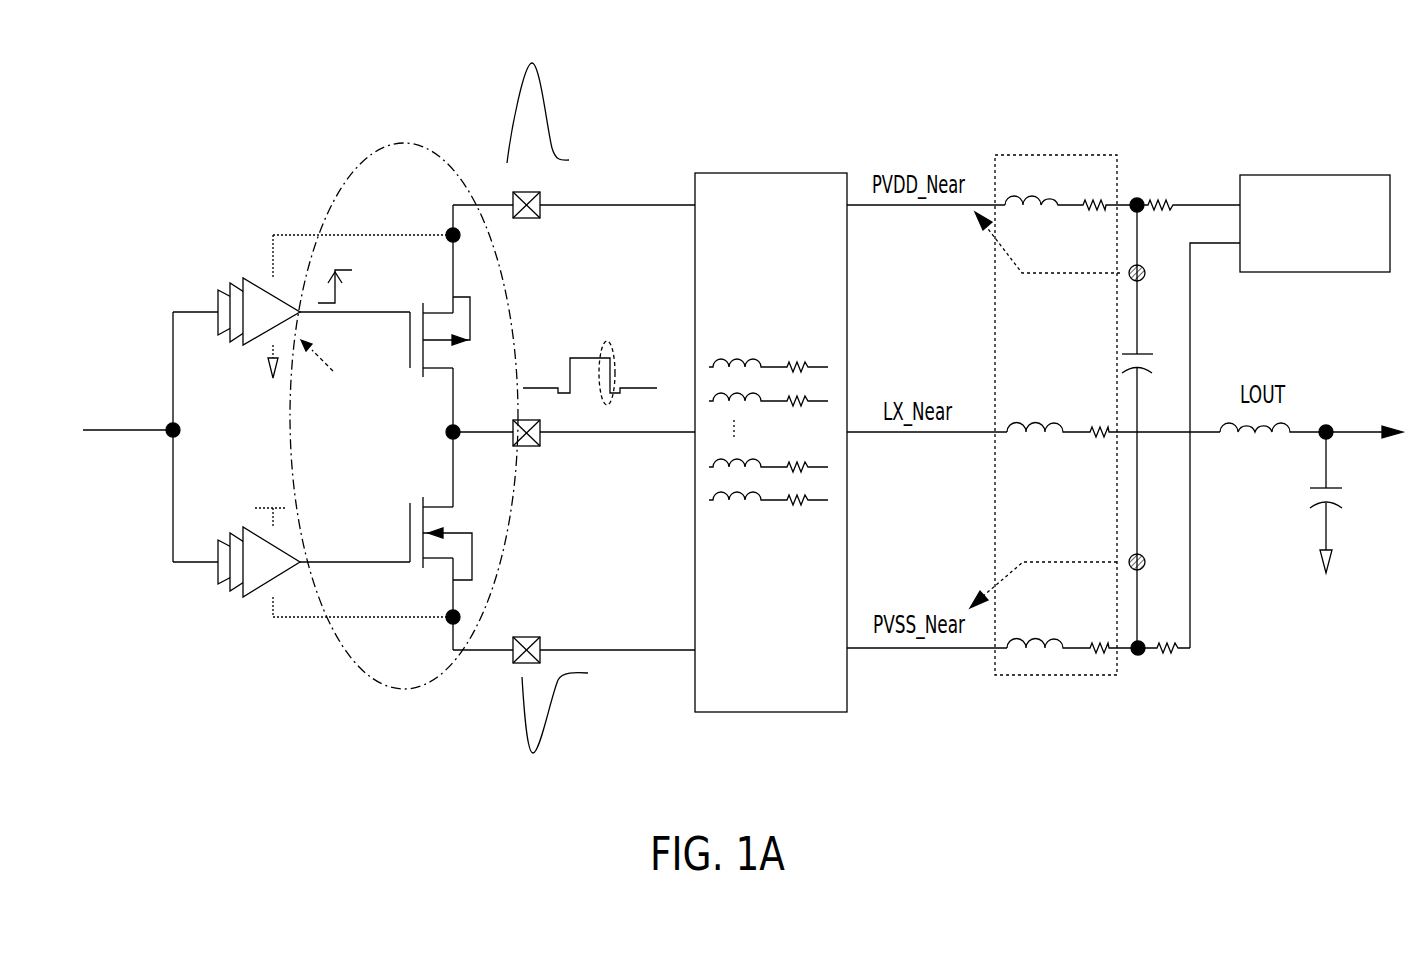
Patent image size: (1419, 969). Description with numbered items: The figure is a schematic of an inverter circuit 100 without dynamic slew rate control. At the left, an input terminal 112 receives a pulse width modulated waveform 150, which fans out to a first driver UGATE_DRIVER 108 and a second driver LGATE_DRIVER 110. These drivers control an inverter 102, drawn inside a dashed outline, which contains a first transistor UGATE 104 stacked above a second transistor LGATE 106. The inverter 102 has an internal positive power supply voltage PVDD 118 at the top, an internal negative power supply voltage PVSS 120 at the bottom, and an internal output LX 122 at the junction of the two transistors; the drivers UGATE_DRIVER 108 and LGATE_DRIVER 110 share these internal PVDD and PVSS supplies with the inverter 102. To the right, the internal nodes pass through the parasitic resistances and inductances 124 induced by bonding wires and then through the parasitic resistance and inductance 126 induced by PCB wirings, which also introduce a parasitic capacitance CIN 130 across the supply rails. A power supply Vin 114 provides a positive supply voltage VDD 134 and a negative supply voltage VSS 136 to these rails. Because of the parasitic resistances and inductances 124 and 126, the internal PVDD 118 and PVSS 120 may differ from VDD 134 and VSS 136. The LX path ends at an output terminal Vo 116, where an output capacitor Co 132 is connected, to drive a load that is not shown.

The inverter circuit 100 is at (295, 147).
The inverter 102 is at (405, 143).
The first transistor UGATE 104 is at (390, 235).
The second transistor LGATE 106 is at (357, 525).
The first driver UGATE_DRIVER 108 is at (172, 212).
The second driver LGATE_DRIVER 110 is at (258, 655).
The input terminal 112 is at (130, 427).
The power supply Vin 114 is at (1298, 173).
The output terminal Vo 116 is at (1342, 402).
The internal positive power supply voltage PVDD 118 is at (595, 183).
The internal negative power supply voltage PVSS 120 is at (577, 614).
The internal output LX 122 is at (593, 421).
The parasitic resistances and inductances of bonding wires 124 is at (787, 605).
The parasitic resistance and inductance of PCB wirings 126 is at (1078, 748).
The parasitic capacitance CIN 130 is at (1155, 316).
The output capacitor Co 132 is at (1368, 522).
The positive supply voltage VDD 134 is at (1190, 167).
The negative supply voltage VSS 136 is at (1210, 280).
The pulse width modulated (PWM) waveform 150 is at (60, 447).